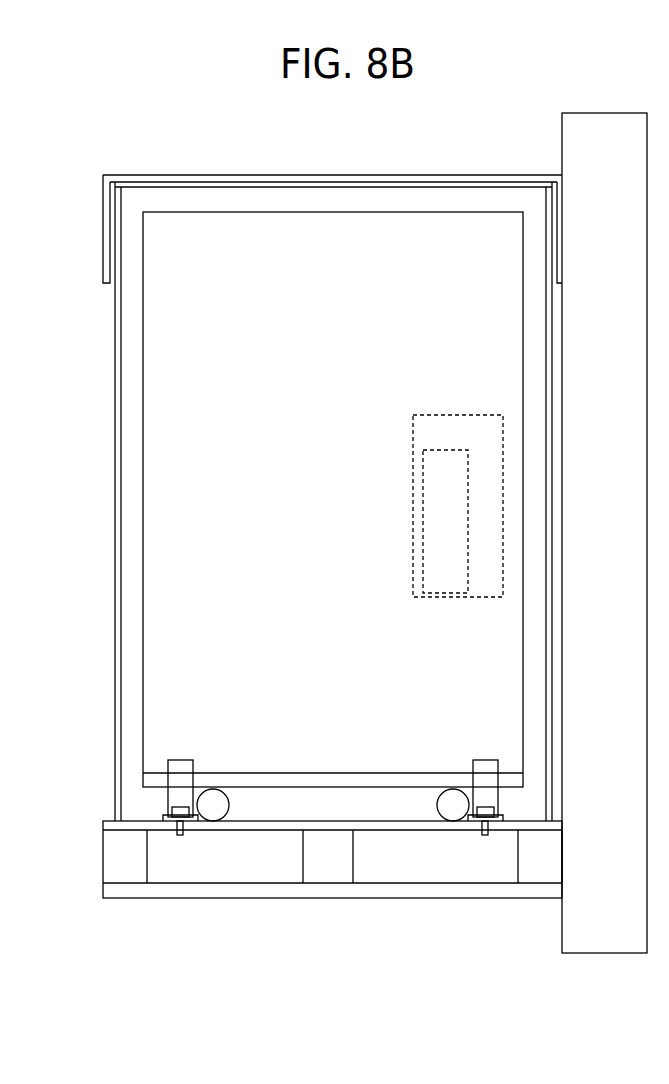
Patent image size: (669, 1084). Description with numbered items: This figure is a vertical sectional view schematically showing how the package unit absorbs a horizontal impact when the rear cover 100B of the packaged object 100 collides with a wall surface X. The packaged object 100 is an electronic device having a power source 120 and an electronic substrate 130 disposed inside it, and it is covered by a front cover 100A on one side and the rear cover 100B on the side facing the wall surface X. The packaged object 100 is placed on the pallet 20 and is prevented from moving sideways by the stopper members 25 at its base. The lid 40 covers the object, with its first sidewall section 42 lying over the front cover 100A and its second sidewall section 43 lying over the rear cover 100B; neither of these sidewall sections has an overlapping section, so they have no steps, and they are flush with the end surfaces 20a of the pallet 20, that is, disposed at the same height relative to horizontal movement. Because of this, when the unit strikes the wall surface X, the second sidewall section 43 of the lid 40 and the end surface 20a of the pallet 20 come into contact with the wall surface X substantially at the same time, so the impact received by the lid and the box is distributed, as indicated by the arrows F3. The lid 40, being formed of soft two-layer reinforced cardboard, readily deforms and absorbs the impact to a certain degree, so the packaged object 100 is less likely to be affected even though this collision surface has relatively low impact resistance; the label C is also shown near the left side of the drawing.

The wall surface X is at (562, 153).
The first sidewall section 42 is at (103, 223).
The second sidewall section 43 is at (558, 219).
The lid 40 is at (215, 173).
The packaged object 100 is at (215, 251).
The front cover 100A is at (143, 450).
The rear cover 100B is at (528, 354).
The center C is at (7, 355).
The power source 120 is at (447, 435).
The electronic substrate 130 is at (443, 527).
The stopper members 25 is at (183, 768).
The pallet 20 is at (103, 858).
The end surfaces 20a is at (567, 858).
The arrows F3 is at (562, 233).